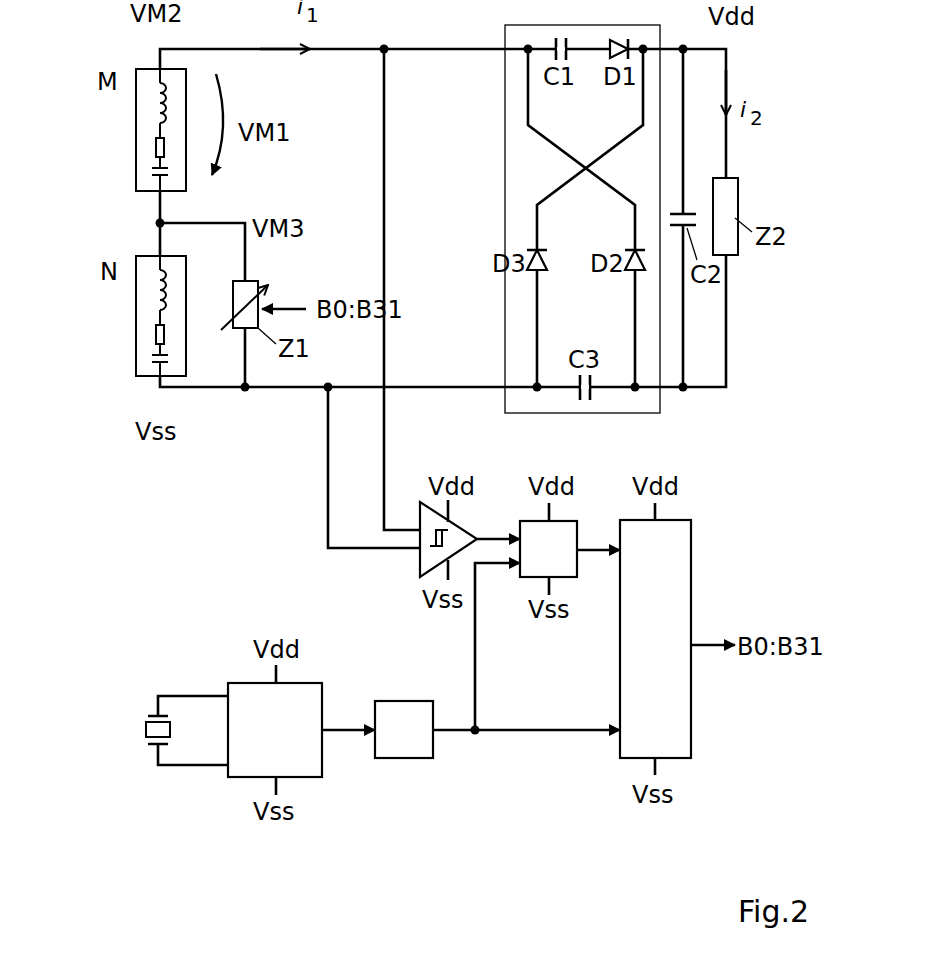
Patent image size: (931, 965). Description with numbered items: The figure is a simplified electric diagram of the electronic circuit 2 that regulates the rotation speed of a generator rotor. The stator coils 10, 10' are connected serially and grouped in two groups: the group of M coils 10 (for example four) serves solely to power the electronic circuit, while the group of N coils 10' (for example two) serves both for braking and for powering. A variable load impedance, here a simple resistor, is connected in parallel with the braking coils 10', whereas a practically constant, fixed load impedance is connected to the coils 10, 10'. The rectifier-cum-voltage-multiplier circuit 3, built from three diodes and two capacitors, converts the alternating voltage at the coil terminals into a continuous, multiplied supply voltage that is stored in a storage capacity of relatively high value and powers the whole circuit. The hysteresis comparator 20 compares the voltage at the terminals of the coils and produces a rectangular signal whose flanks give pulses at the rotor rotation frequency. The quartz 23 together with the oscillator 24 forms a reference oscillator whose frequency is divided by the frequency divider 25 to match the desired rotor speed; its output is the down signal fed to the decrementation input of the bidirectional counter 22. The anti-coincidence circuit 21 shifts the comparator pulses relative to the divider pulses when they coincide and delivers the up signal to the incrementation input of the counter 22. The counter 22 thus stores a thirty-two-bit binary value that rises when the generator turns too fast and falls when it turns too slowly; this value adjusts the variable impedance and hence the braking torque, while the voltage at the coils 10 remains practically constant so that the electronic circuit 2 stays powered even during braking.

The electronic circuit 2 is at (136, 620).
The rectifier-cum-voltage-multiplier circuit 3 is at (633, 413).
The coils 10 is at (108, 130).
The coils 10' is at (105, 316).
The hysteresis comparator 20 is at (420, 568).
The anti-coincidence circuit 21 is at (548, 549).
The bidirectional counter 22 is at (655, 639).
The quartz 23 is at (145, 733).
The oscillator 24 is at (275, 730).
The frequency divider 25 is at (404, 729).